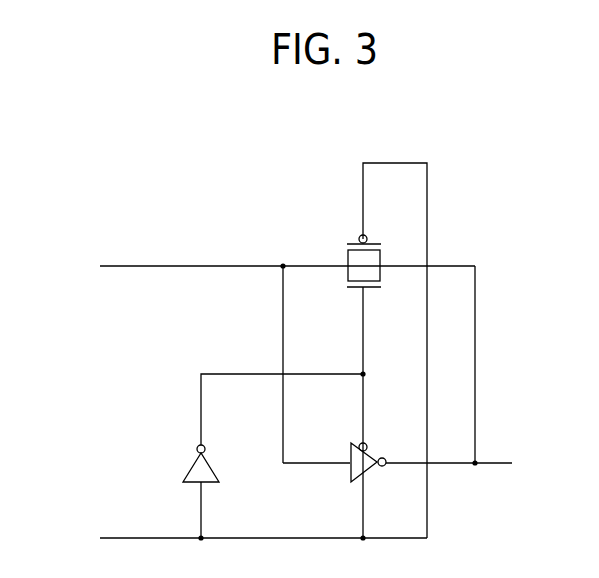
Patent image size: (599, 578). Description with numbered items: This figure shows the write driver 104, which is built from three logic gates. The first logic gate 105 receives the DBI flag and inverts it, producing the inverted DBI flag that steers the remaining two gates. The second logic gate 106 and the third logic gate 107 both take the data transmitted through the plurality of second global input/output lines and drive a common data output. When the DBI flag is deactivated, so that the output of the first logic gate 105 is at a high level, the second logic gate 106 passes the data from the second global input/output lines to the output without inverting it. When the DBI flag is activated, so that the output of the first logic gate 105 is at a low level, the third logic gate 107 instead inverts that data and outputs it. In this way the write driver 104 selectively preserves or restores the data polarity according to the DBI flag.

The write driver 104 is at (92, 157).
The first logic gate 105 is at (192, 459).
The second logic gate 106 is at (343, 247).
The third logic gate 107 is at (370, 453).